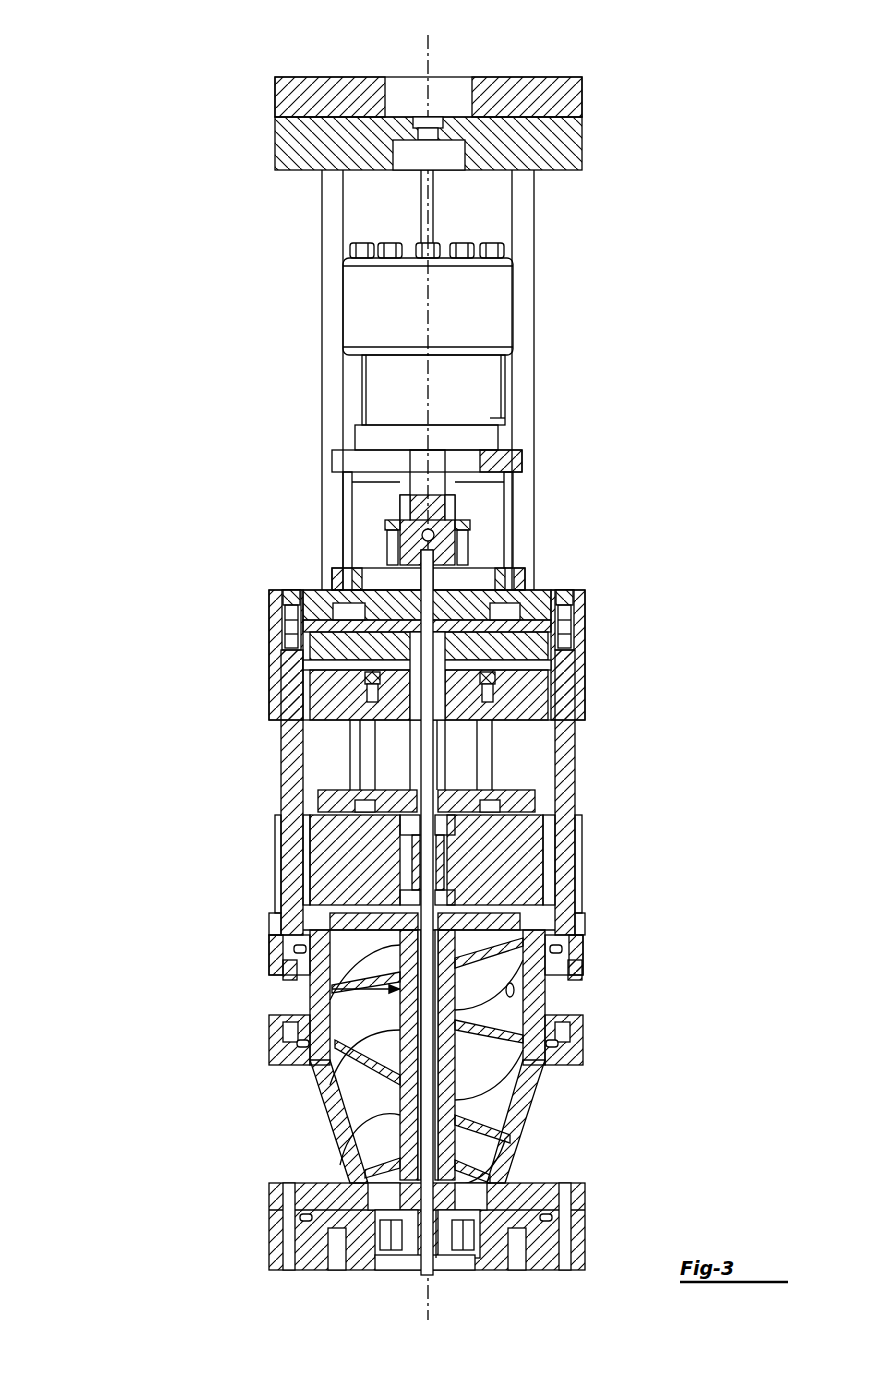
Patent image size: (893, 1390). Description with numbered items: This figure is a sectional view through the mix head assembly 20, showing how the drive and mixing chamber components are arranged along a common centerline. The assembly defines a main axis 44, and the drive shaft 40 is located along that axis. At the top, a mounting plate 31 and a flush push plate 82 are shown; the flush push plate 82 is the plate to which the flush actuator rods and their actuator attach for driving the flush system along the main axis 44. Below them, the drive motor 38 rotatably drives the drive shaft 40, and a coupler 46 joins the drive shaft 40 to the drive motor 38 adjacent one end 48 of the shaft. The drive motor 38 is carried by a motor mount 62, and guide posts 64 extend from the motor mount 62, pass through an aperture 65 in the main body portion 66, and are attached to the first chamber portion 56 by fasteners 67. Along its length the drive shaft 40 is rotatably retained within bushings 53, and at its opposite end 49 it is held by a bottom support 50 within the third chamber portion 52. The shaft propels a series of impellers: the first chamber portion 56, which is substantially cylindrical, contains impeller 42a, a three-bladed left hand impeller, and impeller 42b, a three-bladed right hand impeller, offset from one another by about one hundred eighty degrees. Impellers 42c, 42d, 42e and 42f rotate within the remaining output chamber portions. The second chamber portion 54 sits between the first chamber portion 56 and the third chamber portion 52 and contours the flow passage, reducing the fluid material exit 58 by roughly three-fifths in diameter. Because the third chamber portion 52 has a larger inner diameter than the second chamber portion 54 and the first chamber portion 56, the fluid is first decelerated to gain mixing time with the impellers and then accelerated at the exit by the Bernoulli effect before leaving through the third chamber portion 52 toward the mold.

The mix head assembly 20 is at (155, 362).
The mounting plate 31 is at (288, 104).
The flush push plate 82 is at (300, 150).
The main axis 44 is at (432, 56).
The drive motor 38 is at (485, 316).
The coupler 46 is at (440, 557).
The one end 48 is at (432, 574).
The motor mount 62 is at (578, 613).
The bushings 53 is at (410, 702).
The guide posts 64 is at (292, 762).
The drive shaft 40 is at (440, 862).
The main body portion 66 is at (345, 890).
The aperture 65 is at (578, 932).
The impeller 42a is at (528, 975).
The fasteners 67 is at (292, 962).
The impeller 42b is at (470, 1015).
The first chamber portion 56 is at (322, 1003).
The impeller 42c is at (475, 1040).
The second chamber portion 54 is at (342, 1121).
The impeller 42d is at (455, 1100).
The impeller 42e is at (462, 1148).
The impeller 42f is at (488, 1182).
The bottom support 50 is at (312, 1240).
The third chamber portion 52 is at (396, 1262).
The opposite end 49 is at (430, 1278).
The fluid material exit 58 is at (440, 1254).